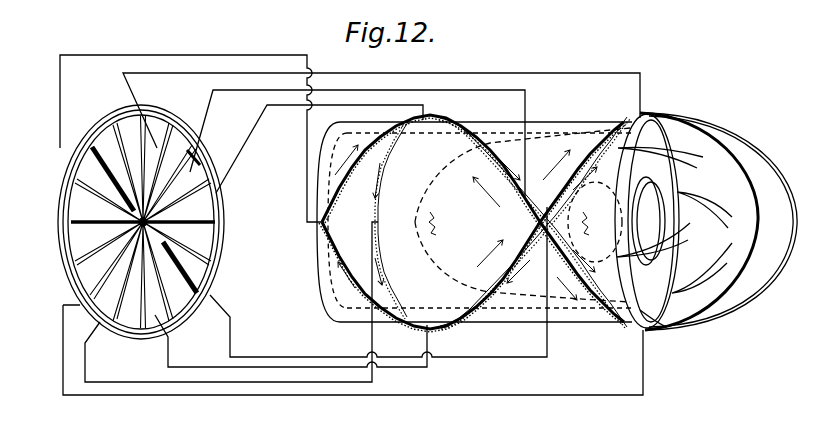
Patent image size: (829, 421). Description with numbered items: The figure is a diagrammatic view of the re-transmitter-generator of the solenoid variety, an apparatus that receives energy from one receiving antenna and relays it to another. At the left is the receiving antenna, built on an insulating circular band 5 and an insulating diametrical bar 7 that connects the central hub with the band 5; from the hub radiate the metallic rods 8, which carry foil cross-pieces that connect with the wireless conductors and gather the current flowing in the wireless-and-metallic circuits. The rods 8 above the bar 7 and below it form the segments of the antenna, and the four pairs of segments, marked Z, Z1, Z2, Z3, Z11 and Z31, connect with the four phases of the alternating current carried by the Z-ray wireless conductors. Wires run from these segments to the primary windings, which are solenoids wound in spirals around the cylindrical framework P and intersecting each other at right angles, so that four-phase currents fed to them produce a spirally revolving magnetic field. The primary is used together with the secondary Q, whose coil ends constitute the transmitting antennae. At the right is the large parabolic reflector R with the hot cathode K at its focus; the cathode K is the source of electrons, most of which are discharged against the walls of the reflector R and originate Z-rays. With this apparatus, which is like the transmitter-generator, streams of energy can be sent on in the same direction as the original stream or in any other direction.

The circular band 5 is at (218, 257).
The diametrical bar 7 is at (193, 170).
The metallic rods 8 is at (189, 197).
The winding coil Z2 is at (157, 148).
The winding coil Z3 is at (125, 170).
The winding coil Z is at (165, 194).
The winding coil Z' Z1 is at (130, 208).
The winding coil Z'' Z11 is at (135, 253).
The winding coil Z3' Z31 is at (167, 290).
The secondary Q is at (545, 132).
The cylindrical framework P is at (494, 323).
The parabolic reflector R is at (502, 220).
The hot cathode K is at (525, 222).